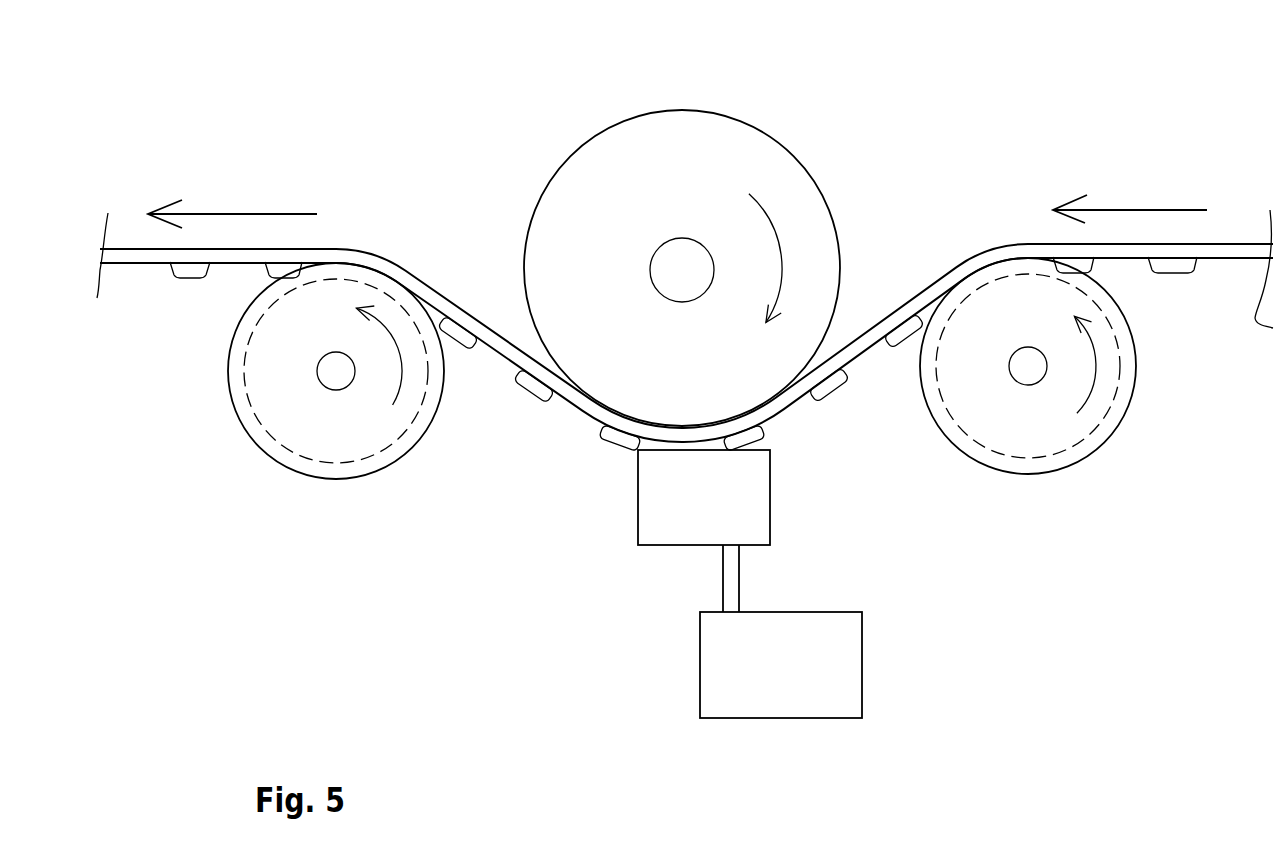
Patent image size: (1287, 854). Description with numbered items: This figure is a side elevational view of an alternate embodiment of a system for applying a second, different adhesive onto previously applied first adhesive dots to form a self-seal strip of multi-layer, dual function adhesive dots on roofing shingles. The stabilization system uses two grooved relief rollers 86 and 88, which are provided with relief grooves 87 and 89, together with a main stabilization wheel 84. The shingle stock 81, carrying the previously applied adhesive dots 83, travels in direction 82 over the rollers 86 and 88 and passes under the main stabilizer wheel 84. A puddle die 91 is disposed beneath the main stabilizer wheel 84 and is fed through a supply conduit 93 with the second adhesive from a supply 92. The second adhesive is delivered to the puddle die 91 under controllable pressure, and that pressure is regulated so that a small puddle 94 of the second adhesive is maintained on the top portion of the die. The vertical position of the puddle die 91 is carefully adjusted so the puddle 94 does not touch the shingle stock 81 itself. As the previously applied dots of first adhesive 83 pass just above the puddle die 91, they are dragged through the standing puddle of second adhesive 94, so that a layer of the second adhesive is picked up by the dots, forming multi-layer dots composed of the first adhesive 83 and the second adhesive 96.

The shingle stock 81 is at (1003, 247).
The direction 82 is at (238, 207).
The adhesive dots 83 is at (527, 356).
The main stabilization wheel 84 is at (750, 158).
The grooved relief roller 86 is at (1038, 420).
The relief groove 87 is at (1118, 362).
The roller 88 is at (280, 350).
The relief groove 89 is at (287, 443).
The puddle die 91 is at (658, 525).
The supply 92 is at (715, 670).
The supply conduit 93 is at (733, 587).
The puddle of second adhesive 94 is at (673, 437).
The second adhesive 96 is at (464, 340).